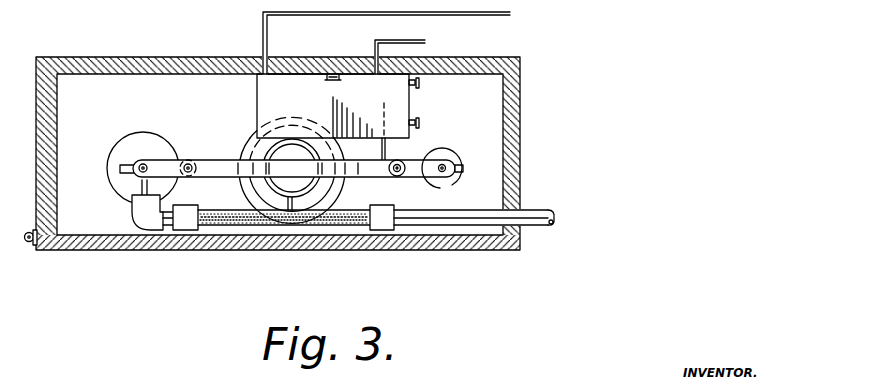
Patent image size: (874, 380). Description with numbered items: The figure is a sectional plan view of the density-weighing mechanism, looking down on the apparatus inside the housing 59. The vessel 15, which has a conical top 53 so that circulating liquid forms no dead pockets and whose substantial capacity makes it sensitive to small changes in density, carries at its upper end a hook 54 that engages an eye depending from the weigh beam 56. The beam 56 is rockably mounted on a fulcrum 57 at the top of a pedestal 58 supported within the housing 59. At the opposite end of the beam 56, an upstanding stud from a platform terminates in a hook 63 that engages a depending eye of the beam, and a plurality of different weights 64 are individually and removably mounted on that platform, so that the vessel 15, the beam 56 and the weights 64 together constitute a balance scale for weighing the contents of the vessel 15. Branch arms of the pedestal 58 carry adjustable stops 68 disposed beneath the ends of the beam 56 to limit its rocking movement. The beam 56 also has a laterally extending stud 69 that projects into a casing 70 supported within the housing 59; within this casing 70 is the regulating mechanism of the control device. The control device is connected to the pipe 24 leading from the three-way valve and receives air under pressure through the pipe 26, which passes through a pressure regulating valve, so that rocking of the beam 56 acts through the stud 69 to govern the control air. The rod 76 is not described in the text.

The vessel 15 is at (115, 148).
The pipe 24 is at (263, 32).
The pipe 26 is at (426, 41).
The conical top 53 is at (135, 147).
The hook 54 is at (124, 167).
The weigh beam 56 is at (228, 160).
The fulcrum 57 is at (340, 228).
The pedestal 58 is at (290, 222).
The housing 59 is at (515, 121).
The hook 63 is at (465, 180).
The weights 64 is at (464, 152).
The adjustable stops 68 is at (190, 160).
The stud 69 is at (384, 103).
The casing 70 is at (257, 88).
The rod 76 is at (545, 226).